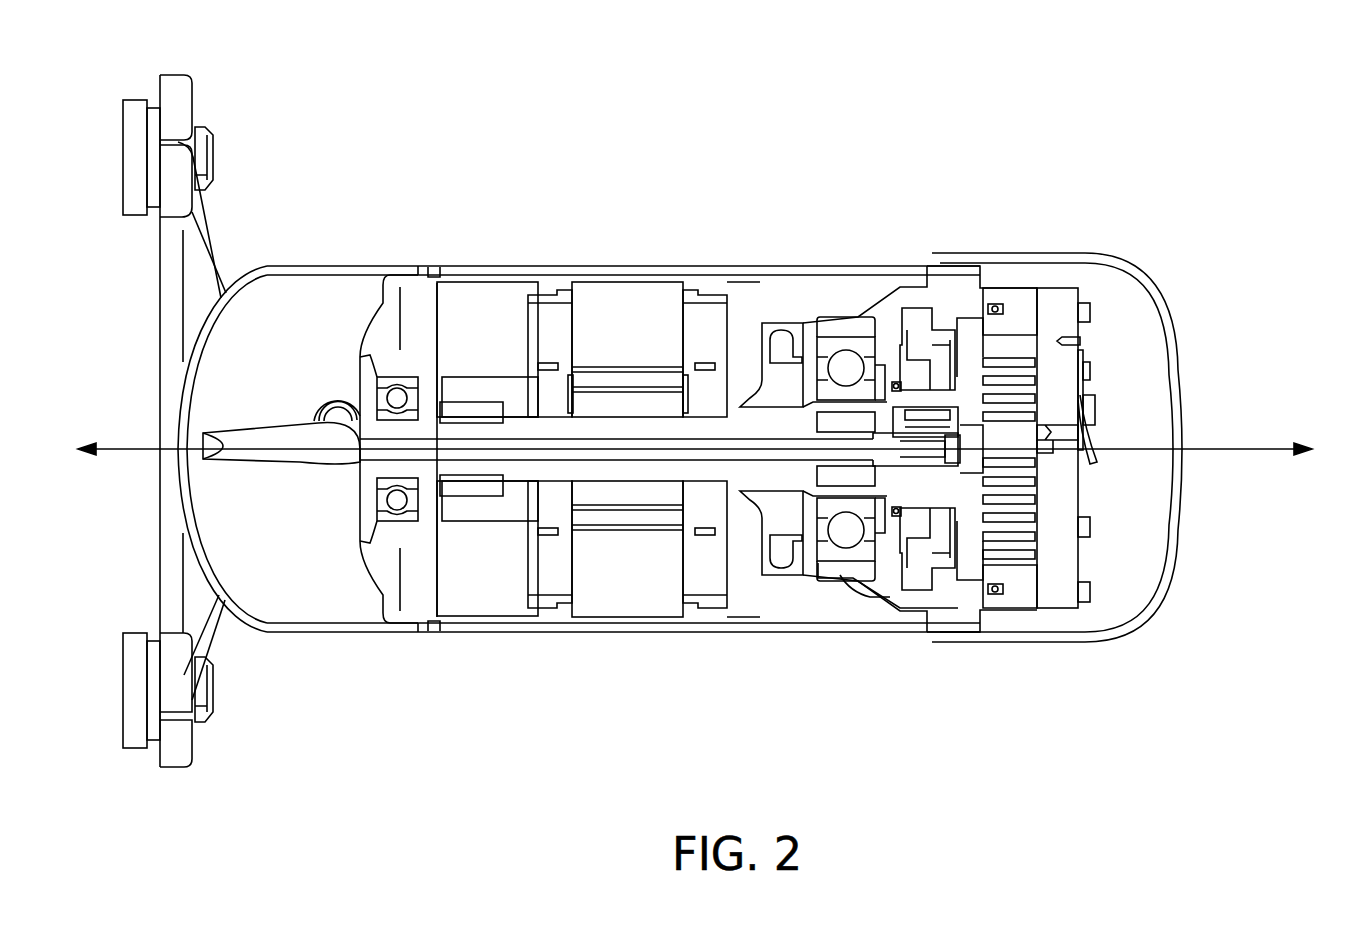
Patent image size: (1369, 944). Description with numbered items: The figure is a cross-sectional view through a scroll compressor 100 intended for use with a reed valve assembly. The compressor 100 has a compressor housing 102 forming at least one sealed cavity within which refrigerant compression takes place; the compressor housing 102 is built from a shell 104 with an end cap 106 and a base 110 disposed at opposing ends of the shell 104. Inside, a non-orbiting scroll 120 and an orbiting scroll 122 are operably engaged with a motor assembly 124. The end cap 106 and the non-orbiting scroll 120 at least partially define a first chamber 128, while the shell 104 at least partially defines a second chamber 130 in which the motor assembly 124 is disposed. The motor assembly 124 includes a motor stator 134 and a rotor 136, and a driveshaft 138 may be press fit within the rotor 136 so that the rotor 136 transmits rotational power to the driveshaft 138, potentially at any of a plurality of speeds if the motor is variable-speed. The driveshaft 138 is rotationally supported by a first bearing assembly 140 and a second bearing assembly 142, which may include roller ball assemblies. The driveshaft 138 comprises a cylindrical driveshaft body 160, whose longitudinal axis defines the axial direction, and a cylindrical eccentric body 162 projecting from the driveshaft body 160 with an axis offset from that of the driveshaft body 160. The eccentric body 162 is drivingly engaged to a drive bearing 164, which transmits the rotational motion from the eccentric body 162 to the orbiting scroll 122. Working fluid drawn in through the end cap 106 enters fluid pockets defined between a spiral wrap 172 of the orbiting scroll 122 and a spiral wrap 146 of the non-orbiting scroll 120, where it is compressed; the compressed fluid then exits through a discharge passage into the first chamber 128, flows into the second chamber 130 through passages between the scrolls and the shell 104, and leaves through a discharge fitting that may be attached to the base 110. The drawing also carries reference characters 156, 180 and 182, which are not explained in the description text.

The scroll compressor 100 is at (641, 152).
The compressor housing 102 is at (1090, 252).
The shell 104 is at (797, 267).
The end cap 106 is at (1034, 252).
The base 110 is at (197, 243).
The non-orbiting scroll 120 is at (1045, 385).
The orbiting scroll 122 is at (968, 340).
The motor assembly 124 is at (586, 290).
The first chamber 128 is at (1112, 366).
The second chamber 130 is at (746, 326).
The motor stator 134 is at (660, 572).
The rotor 136 is at (582, 492).
The driveshaft 138 is at (508, 420).
The first bearing assembly 140 is at (848, 365).
The second bearing assembly 142 is at (383, 383).
The spiral wrap of the non-orbiting scroll 146 is at (1022, 562).
The sensor pin 156 is at (1060, 435).
The driveshaft body 160 is at (840, 477).
The eccentric body 162 is at (912, 458).
The drive bearing 164 is at (938, 462).
The spiral wrap of the orbiting scroll 172 is at (1028, 541).
The cover 180 is at (887, 318).
The lower cover 182 is at (822, 572).